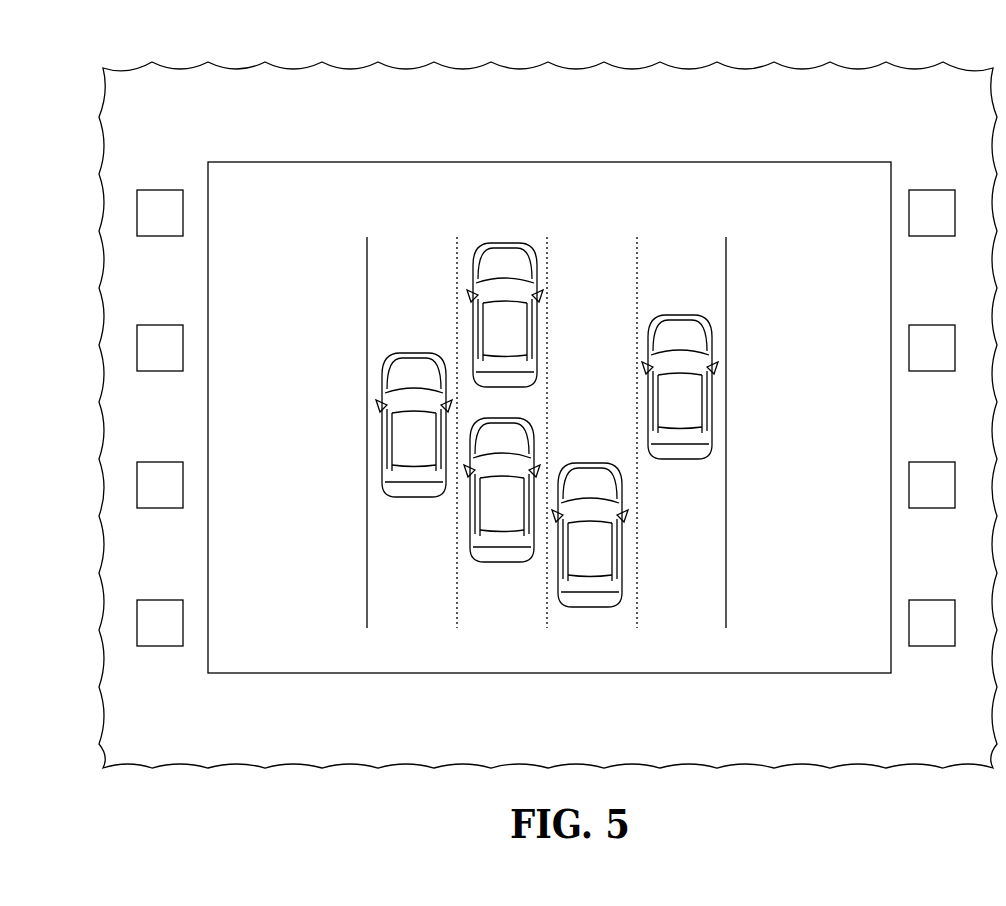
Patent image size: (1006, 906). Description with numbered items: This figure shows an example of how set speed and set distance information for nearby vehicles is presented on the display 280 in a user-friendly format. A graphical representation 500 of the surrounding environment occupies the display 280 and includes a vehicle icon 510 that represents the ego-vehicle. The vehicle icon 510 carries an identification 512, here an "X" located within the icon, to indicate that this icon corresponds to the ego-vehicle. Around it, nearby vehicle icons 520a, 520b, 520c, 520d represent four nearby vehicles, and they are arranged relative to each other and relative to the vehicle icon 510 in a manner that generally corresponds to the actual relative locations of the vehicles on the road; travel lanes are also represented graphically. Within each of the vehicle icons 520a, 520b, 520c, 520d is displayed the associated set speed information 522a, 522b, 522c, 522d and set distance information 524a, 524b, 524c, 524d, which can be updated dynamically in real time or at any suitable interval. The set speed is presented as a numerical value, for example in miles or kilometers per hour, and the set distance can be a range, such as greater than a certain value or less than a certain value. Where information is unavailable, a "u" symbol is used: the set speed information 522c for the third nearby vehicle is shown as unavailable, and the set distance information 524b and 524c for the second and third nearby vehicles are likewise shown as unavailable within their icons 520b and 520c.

The graphical representation 500 is at (285, 215).
The display 280 is at (922, 108).
The vehicle icon 510 is at (588, 605).
The identification 512 is at (598, 548).
The nearby vehicle icon 520a is at (502, 563).
The nearby vehicle icon 520b is at (412, 493).
The nearby vehicle icon 520c is at (507, 388).
The nearby vehicle icon 520d is at (680, 459).
The set speed information 522a is at (490, 493).
The set speed information 522b is at (398, 430).
The set speed information 522c is at (490, 322).
The set speed information 522d is at (668, 385).
The set distance information 524a is at (486, 515).
The set distance information 524b is at (398, 453).
The set distance information 524c is at (490, 344).
The set distance information 524d is at (668, 406).